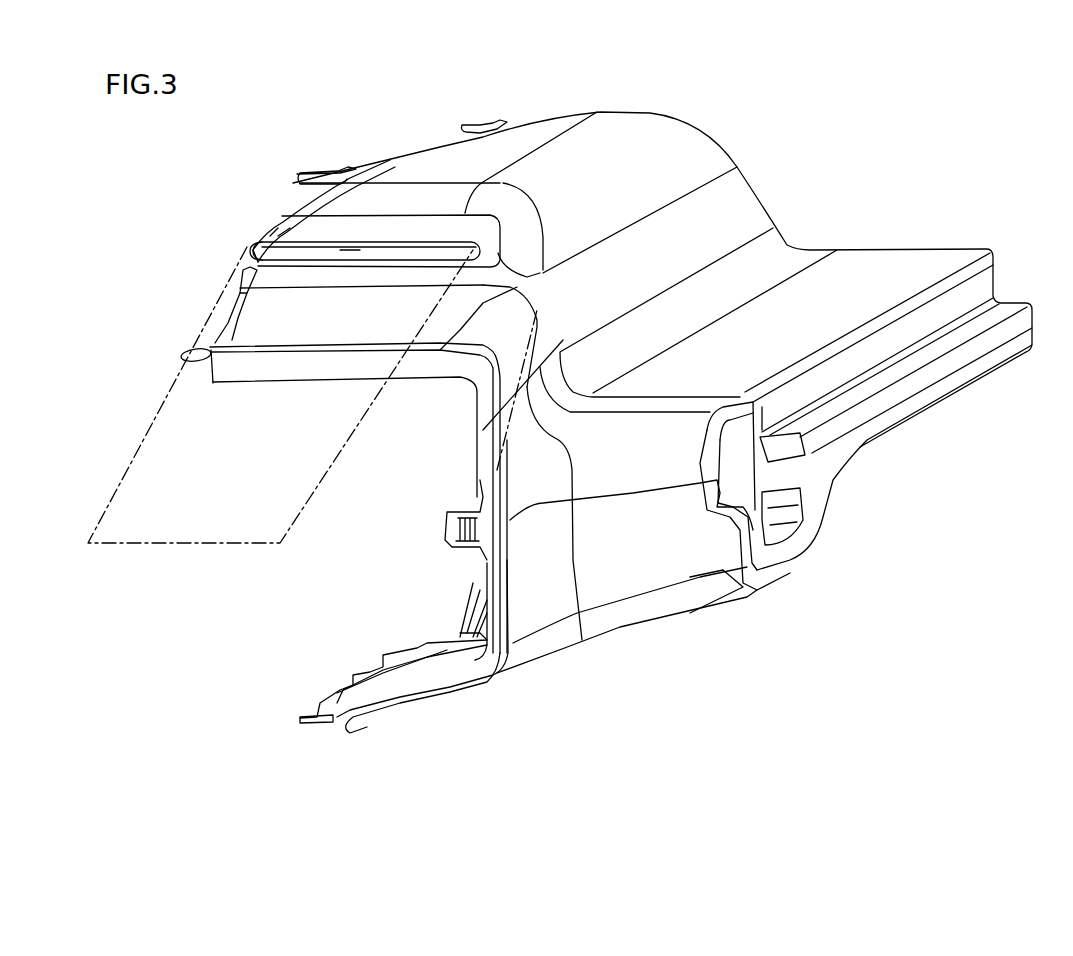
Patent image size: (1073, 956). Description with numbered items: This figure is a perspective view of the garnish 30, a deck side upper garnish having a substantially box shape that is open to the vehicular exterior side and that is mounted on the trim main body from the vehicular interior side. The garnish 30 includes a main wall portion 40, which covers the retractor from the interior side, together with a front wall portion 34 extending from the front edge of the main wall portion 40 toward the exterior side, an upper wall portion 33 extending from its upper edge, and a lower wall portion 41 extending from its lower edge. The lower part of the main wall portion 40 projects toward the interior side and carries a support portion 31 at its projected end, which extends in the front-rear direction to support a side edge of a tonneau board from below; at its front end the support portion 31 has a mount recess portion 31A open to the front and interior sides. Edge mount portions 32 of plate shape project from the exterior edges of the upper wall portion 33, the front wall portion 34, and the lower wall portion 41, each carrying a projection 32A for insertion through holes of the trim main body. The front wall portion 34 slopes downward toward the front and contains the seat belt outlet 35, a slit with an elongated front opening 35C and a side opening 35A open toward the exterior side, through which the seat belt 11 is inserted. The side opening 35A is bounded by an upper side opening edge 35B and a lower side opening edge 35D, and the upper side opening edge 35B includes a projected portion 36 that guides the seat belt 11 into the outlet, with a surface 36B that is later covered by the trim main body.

The seat belt 11 is at (188, 460).
The garnish 30 is at (766, 183).
The support portion 31 is at (922, 393).
The mount recess portion 31A is at (788, 508).
The edge mount portion 32 is at (318, 176).
The projection 32A is at (467, 545).
The upper wall portion 33 is at (528, 137).
The front wall portion 34 is at (365, 318).
The seat belt outlet 35 is at (400, 262).
The side opening 35A is at (256, 258).
The upper side opening edge 35B is at (284, 228).
The front opening 35C is at (368, 240).
The lower side opening edge 35D is at (272, 280).
The projected portion 36 is at (255, 240).
The surface of the projected portion 36B is at (272, 236).
The main wall portion 40 is at (635, 263).
The lower wall portion 41 is at (448, 687).